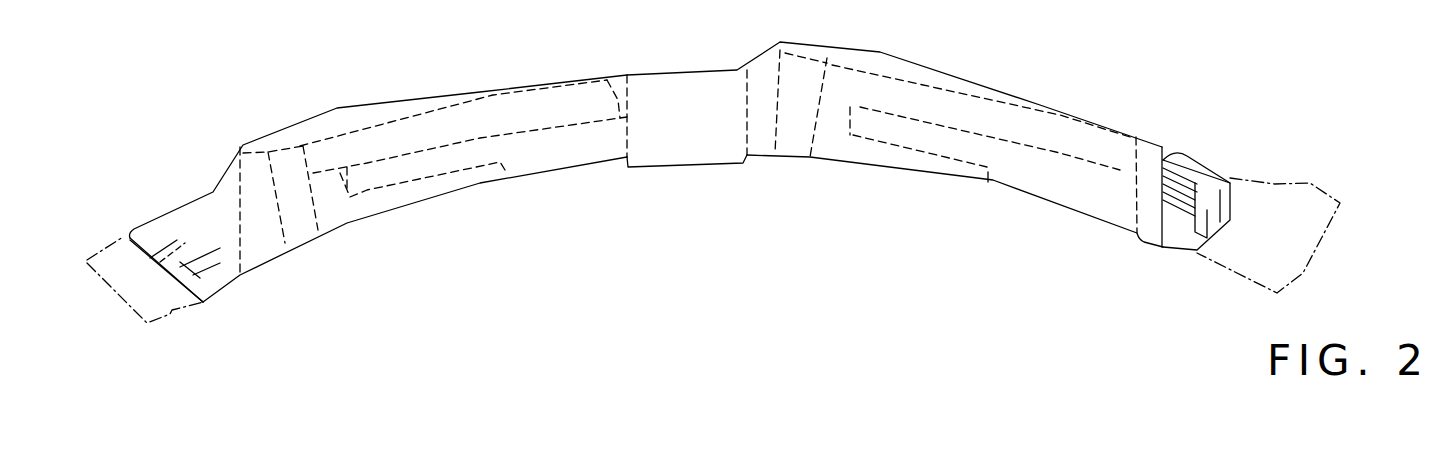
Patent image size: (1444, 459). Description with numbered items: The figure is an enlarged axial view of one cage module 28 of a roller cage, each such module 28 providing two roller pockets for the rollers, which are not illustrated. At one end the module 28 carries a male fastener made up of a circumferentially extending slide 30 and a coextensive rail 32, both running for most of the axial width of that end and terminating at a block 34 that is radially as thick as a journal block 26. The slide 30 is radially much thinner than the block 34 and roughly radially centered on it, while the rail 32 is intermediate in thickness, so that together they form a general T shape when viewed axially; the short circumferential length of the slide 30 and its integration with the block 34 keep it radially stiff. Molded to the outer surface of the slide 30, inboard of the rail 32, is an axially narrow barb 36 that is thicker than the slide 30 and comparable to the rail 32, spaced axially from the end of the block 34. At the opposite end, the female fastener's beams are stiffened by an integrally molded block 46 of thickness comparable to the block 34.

The journal block 26 is at (693, 153).
The cage module 28 is at (1038, 90).
The slide 30 is at (213, 300).
The rail 32 is at (223, 272).
The block 34 is at (1195, 172).
The barb 36 is at (1178, 177).
The block 46 is at (160, 230).